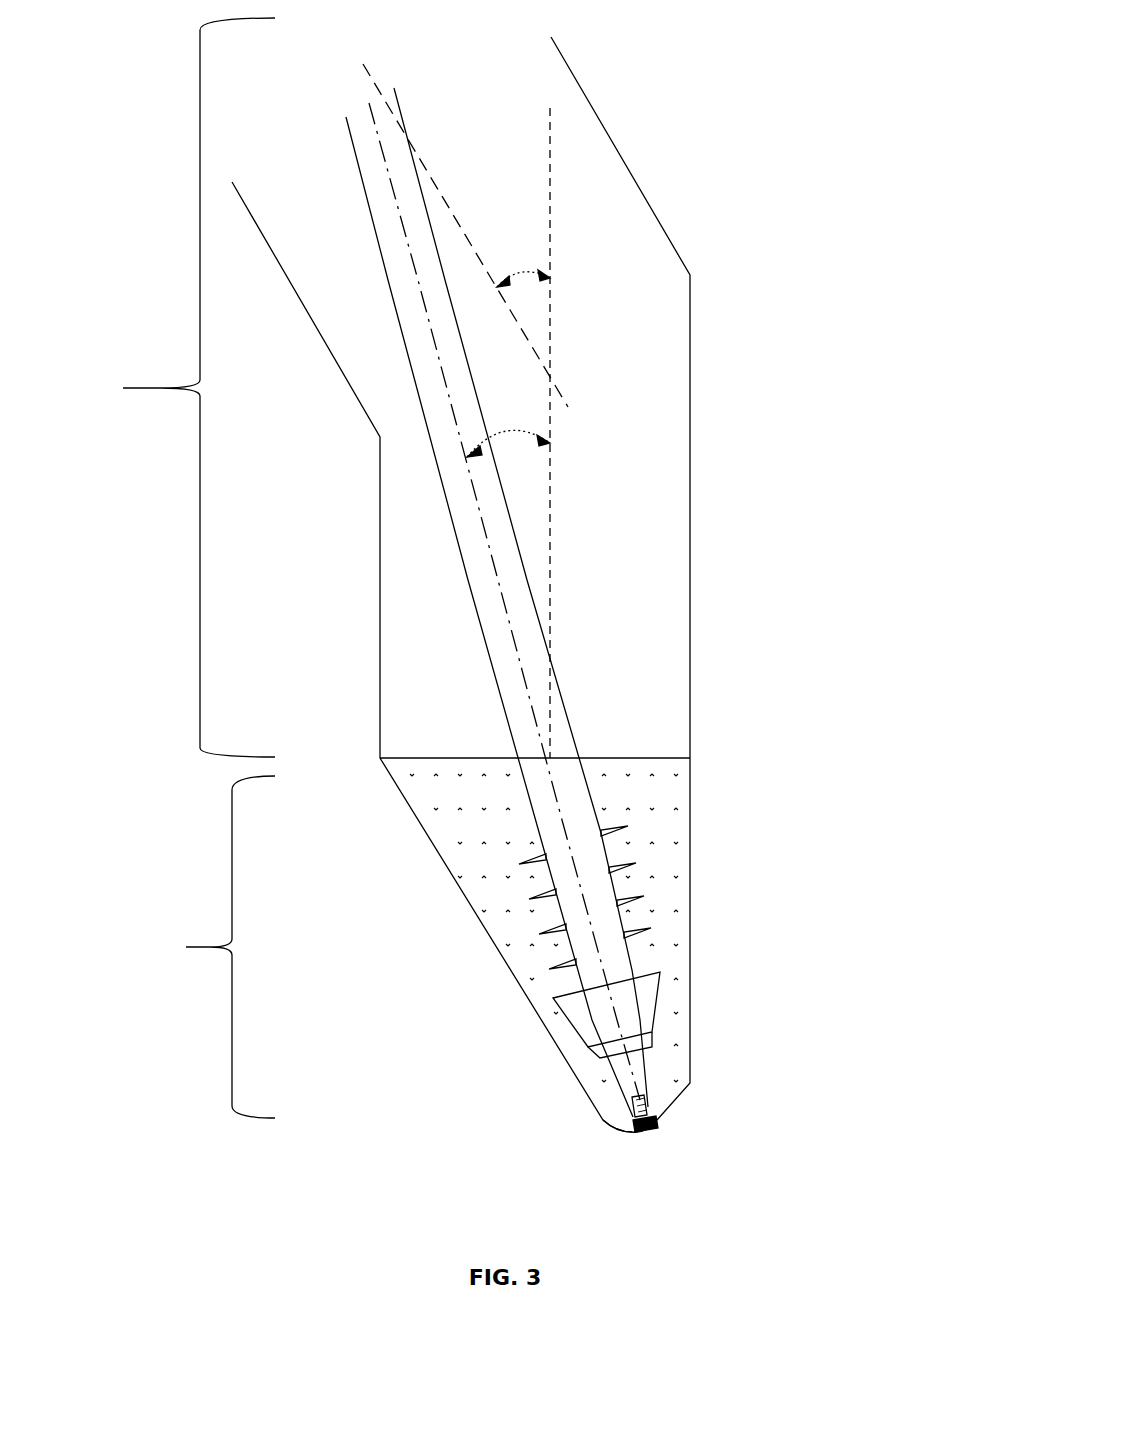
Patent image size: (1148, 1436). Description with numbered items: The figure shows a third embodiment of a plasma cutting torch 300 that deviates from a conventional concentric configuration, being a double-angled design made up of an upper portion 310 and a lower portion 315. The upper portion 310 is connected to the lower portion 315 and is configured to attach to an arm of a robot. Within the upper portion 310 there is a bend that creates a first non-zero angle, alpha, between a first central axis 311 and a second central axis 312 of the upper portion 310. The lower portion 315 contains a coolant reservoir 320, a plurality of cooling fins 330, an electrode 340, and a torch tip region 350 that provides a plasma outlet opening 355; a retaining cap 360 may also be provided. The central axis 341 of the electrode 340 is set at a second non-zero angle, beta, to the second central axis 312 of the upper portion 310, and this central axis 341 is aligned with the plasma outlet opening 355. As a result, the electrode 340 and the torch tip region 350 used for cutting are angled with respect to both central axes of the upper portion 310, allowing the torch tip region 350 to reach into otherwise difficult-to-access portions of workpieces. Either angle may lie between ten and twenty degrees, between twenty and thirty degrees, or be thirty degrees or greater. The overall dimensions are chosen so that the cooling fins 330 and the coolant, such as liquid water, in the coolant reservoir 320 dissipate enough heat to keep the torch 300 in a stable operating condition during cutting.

The plasma cutting torch 300 is at (817, 138).
The upper portion 310 is at (172, 387).
The first central axis 311 is at (452, 212).
The second central axis 312 is at (552, 458).
The lower portion 315 is at (208, 947).
The coolant reservoir 320 is at (669, 803).
The cooling fins 330 is at (553, 888).
The electrode 340 is at (655, 1095).
The central axis of the electrode 341 is at (485, 535).
The torch tip region 350 is at (676, 1144).
The plasma outlet opening 355 is at (646, 1132).
The retaining cap 360 is at (690, 890).